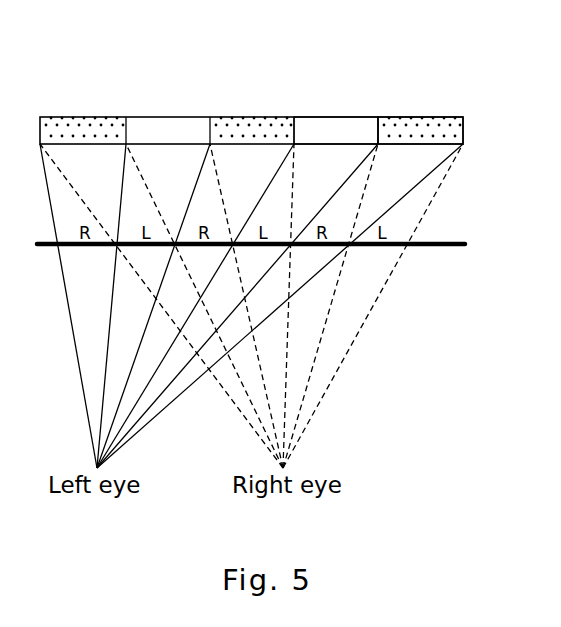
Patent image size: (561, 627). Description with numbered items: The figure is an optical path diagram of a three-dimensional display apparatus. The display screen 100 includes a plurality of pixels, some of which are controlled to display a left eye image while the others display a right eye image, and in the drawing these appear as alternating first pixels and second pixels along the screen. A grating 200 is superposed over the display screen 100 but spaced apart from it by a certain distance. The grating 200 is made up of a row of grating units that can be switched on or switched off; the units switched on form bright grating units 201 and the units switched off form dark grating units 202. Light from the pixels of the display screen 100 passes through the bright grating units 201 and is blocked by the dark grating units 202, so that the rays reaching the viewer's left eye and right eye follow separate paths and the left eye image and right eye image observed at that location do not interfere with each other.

The display screen 100 is at (385, 248).
The grating 200 is at (382, 69).
The bright grating unit 201 is at (342, 132).
The dark grating unit 202 is at (418, 130).